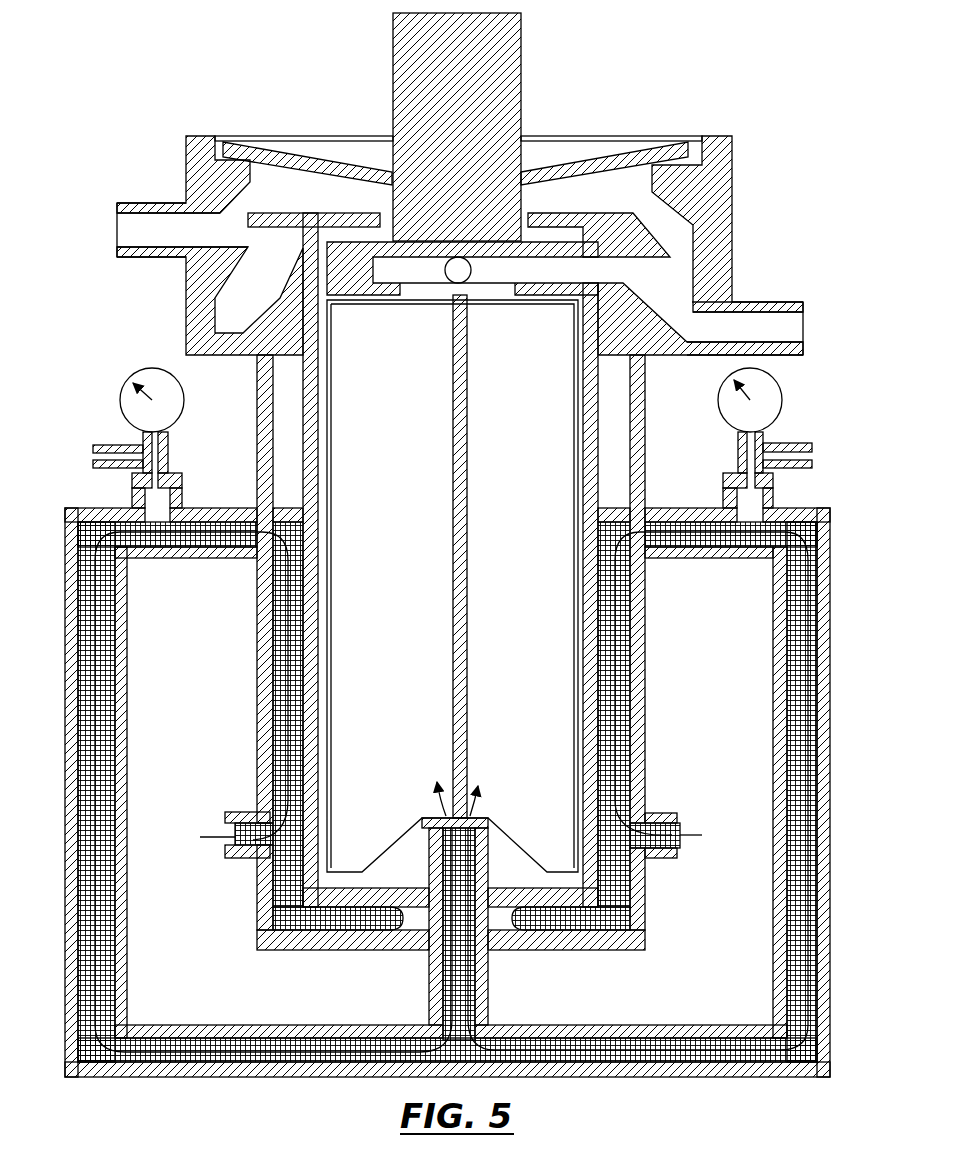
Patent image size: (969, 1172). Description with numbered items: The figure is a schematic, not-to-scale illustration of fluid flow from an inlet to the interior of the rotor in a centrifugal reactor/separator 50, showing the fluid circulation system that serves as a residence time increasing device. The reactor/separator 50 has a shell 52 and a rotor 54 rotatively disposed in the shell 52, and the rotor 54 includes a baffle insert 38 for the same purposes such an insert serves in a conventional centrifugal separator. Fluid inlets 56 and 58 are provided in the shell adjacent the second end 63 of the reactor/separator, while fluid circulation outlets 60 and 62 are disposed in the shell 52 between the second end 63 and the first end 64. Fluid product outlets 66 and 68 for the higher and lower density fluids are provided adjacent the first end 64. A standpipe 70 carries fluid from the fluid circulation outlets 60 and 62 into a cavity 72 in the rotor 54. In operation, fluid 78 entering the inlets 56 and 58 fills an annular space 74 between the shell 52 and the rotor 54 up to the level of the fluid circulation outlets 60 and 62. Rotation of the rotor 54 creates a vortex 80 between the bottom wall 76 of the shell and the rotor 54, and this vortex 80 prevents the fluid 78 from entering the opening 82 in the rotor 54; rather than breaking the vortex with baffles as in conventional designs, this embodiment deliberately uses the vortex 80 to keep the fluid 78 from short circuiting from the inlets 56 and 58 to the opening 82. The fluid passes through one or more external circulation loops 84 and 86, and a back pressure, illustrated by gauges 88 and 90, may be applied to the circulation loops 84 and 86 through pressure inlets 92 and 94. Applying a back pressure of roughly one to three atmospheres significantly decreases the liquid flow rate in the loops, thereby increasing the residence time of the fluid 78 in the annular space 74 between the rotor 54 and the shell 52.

The baffle insert 38 is at (467, 565).
The reactor/separator 50 is at (690, 1089).
The shell 52 is at (265, 718).
The rotor 54 is at (318, 775).
The fluid inlet 56 is at (680, 855).
The fluid inlet 58 is at (217, 852).
The fluid circulation outlet 60 is at (705, 512).
The fluid circulation outlet 62 is at (205, 513).
The second end 63 is at (656, 923).
The first end 64 is at (735, 198).
The fluid product outlet 66 is at (743, 327).
The fluid product outlet 68 is at (172, 228).
The standpipe 70 is at (488, 818).
The cavity 72 is at (395, 680).
The annular space 74 is at (288, 670).
The bottom wall 76 is at (308, 956).
The fluid 78 is at (595, 920).
The vortex 80 is at (498, 917).
The opening 82 is at (427, 878).
The external circulation loop 84 is at (788, 598).
The external circulation loop 86 is at (125, 655).
The gauge 88 is at (782, 393).
The gauge 90 is at (118, 398).
The pressure inlet 92 is at (813, 453).
The pressure inlet 94 is at (95, 458).